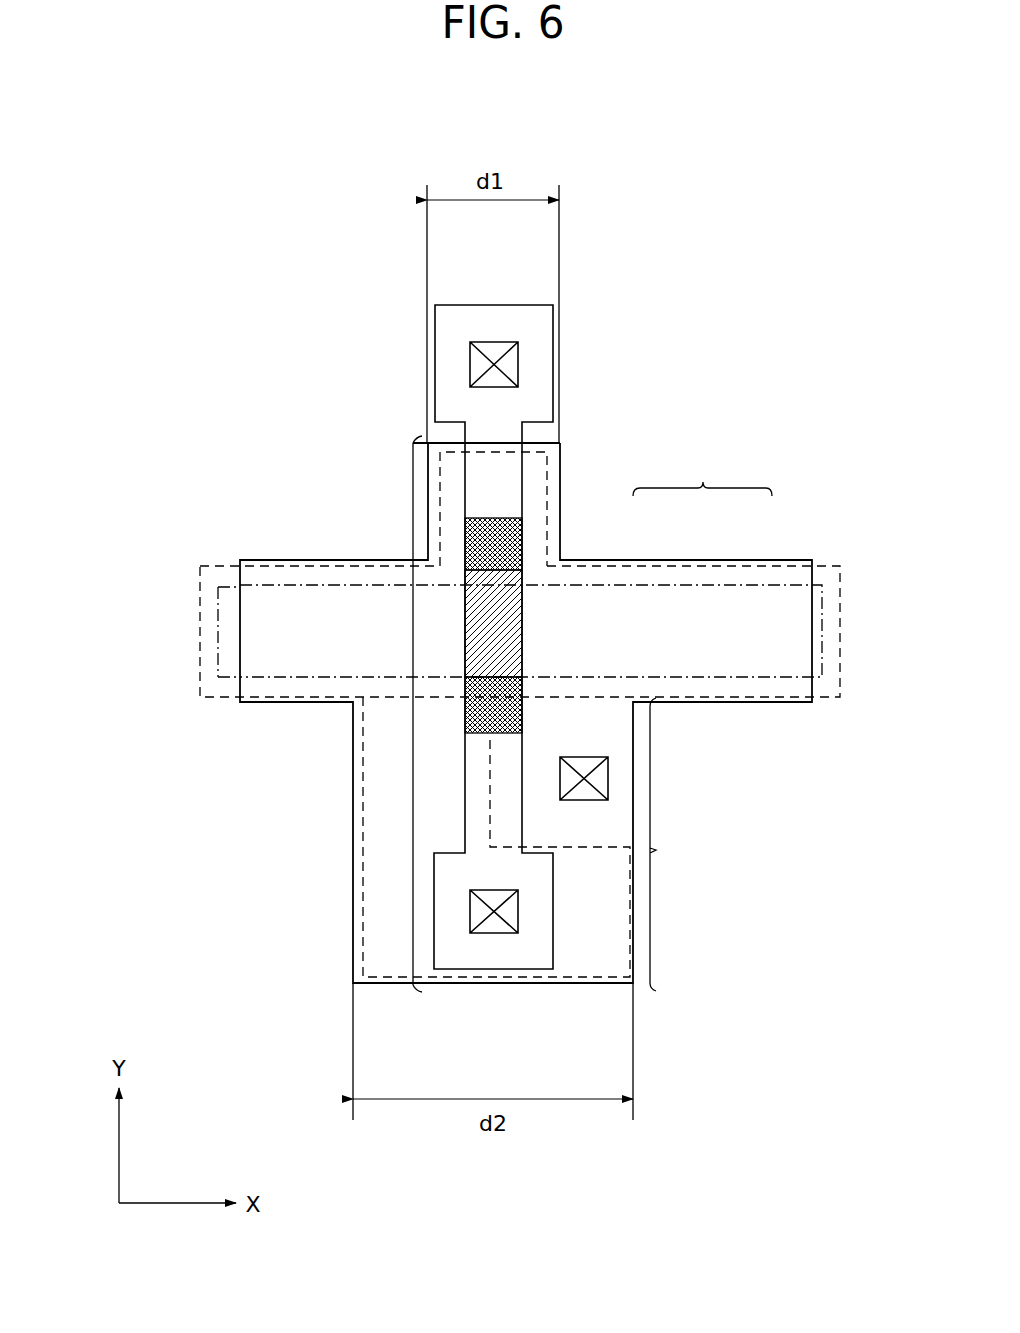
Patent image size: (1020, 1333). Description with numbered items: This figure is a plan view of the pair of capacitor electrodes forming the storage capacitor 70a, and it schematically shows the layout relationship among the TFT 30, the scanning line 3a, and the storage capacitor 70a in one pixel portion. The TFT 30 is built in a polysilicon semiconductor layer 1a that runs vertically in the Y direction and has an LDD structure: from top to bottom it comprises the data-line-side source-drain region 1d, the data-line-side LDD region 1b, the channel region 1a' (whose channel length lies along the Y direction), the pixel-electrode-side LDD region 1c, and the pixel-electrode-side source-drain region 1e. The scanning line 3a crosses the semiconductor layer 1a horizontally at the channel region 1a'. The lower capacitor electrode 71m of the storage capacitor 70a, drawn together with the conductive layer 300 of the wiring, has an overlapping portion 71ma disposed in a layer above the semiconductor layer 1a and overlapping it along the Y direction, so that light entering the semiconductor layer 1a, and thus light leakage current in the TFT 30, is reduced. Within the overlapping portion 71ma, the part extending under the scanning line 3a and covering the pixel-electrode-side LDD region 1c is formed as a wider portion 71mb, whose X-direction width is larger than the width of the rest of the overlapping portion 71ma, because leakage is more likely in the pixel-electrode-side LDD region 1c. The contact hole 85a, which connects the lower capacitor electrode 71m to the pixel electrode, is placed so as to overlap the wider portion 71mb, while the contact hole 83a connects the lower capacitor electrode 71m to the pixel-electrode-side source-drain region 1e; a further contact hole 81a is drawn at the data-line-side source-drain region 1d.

The contact hole 81a is at (496, 345).
The contact hole 83a is at (493, 930).
The contact hole 85a is at (598, 800).
The semiconductor layer 1a is at (487, 680).
The channel region 1a' is at (551, 623).
The data-line-side LDD region 1b is at (522, 532).
The pixel-electrode-side LDD region 1c is at (522, 712).
The data-line-side source-drain region 1d is at (510, 472).
The pixel-electrode-side source-drain region 1e is at (510, 778).
The scanning line 3a is at (788, 585).
The TFT 30 is at (545, 652).
The storage capacitor 70a is at (702, 475).
The conductive layer 300 is at (622, 562).
The lower capacitor electrode 71m is at (700, 560).
The overlapping portion 71ma is at (408, 712).
The wider portion 71mb is at (686, 844).